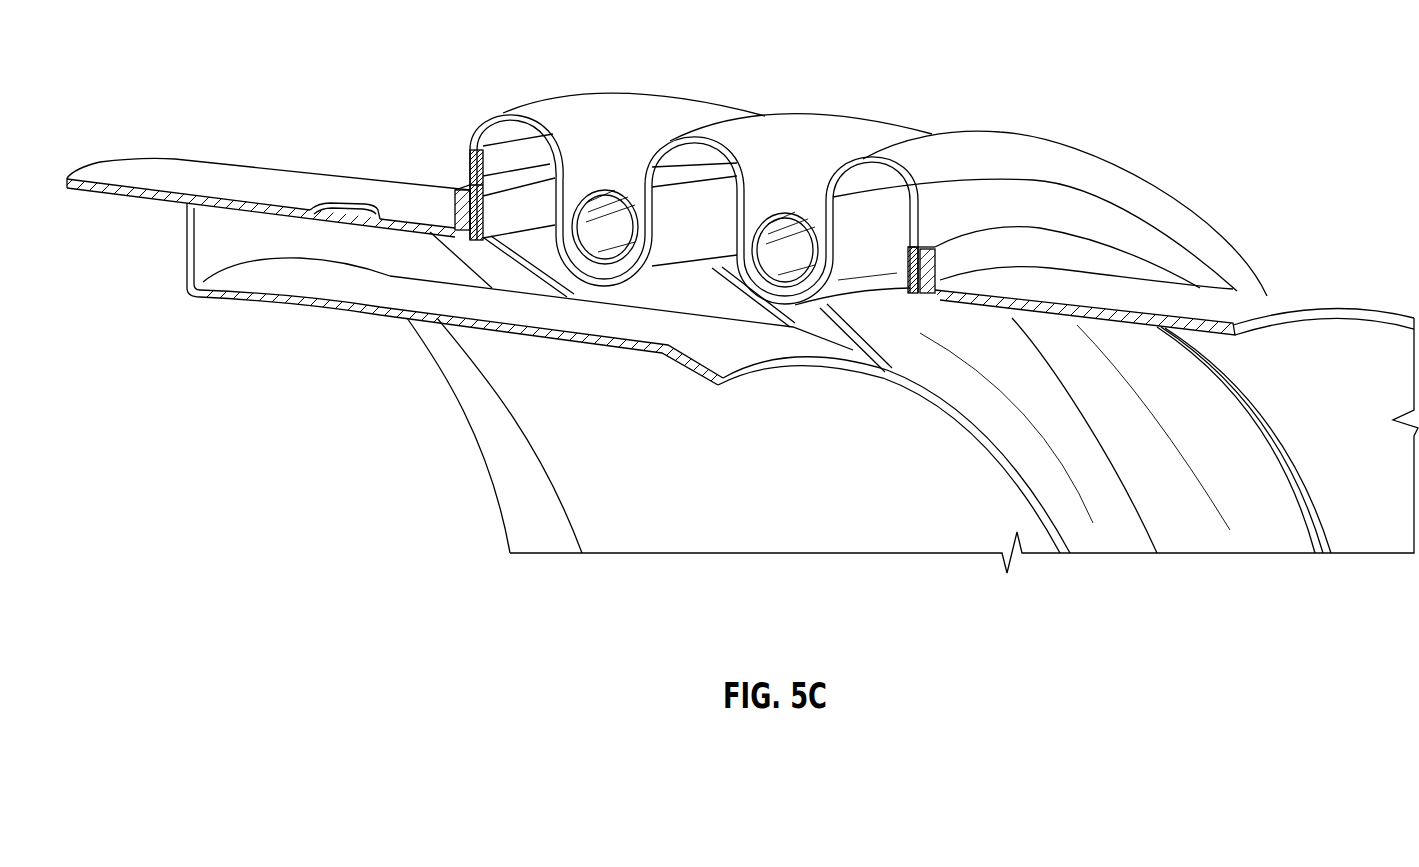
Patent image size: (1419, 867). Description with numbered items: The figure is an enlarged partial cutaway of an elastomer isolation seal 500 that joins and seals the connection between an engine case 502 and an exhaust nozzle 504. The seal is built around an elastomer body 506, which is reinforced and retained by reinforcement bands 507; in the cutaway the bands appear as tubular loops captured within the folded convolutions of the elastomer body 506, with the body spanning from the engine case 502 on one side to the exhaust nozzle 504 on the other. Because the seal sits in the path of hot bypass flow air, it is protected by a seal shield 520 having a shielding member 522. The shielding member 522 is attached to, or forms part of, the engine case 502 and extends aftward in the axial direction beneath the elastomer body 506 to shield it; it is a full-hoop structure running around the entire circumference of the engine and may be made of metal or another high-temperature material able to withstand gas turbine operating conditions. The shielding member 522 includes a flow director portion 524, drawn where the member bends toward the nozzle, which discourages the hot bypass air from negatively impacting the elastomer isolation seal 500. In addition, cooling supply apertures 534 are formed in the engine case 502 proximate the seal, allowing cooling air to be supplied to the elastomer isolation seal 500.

The elastomer isolation seal 500 is at (896, 80).
The engine case 502 is at (230, 172).
The exhaust nozzle 504 is at (1307, 302).
The elastomer body 506 is at (547, 110).
The reinforcement bands 507 is at (640, 183).
The seal shield 520 is at (316, 446).
The shielding member 522 is at (243, 298).
The flow director portion 524 is at (692, 362).
The cooling supply apertures 534 is at (352, 196).